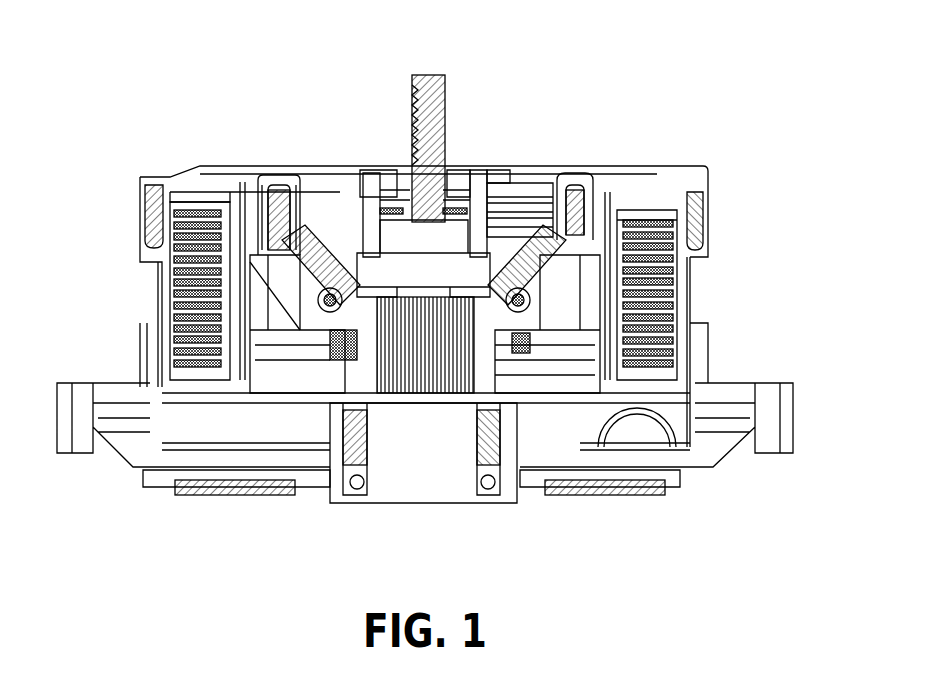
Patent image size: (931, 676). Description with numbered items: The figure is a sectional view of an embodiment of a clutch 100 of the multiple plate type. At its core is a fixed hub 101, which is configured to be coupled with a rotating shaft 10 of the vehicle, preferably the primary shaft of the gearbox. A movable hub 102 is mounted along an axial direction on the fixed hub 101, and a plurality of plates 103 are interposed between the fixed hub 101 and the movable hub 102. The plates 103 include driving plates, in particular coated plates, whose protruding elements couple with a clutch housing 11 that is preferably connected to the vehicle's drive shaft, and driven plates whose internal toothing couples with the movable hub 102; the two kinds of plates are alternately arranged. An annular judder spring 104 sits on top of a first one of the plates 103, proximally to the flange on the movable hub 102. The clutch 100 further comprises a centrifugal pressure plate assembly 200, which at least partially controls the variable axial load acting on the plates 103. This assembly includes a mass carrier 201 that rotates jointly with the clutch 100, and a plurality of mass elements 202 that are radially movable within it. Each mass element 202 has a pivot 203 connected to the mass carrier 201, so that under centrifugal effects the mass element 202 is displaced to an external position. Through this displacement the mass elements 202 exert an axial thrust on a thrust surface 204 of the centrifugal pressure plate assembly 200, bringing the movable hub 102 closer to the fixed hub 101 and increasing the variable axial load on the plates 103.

The clutch 100 is at (660, 65).
The rotating shaft 10 is at (432, 372).
The clutch housing 11 is at (680, 388).
The fixed hub 101 is at (558, 388).
The movable hub 102 is at (643, 210).
The plates 103 is at (196, 315).
The judder spring 104 is at (217, 228).
The centrifugal pressure plate assembly 200 is at (525, 218).
The mass carrier 201 is at (353, 247).
The mass elements 202 is at (322, 262).
The pivot 203 is at (277, 190).
The thrust surface 204 is at (325, 322).